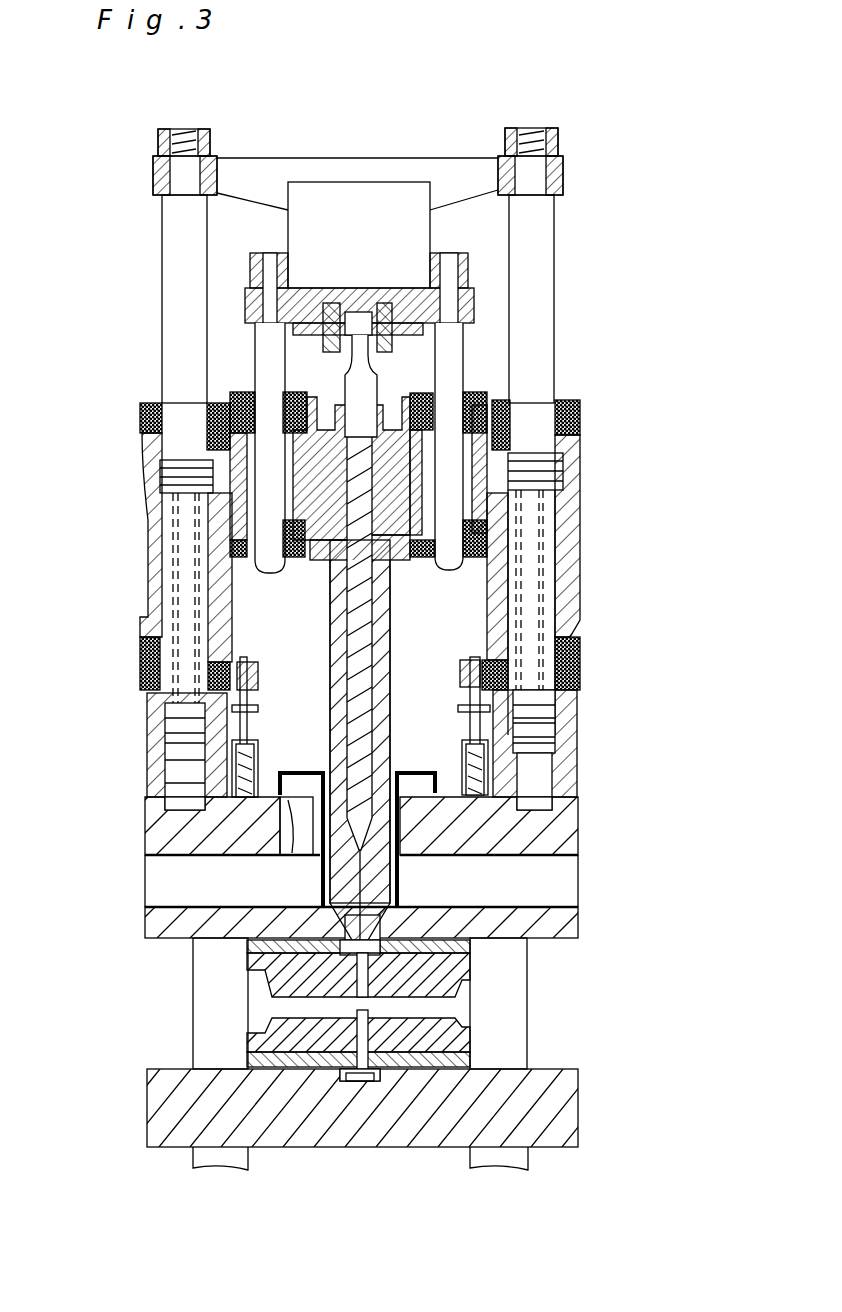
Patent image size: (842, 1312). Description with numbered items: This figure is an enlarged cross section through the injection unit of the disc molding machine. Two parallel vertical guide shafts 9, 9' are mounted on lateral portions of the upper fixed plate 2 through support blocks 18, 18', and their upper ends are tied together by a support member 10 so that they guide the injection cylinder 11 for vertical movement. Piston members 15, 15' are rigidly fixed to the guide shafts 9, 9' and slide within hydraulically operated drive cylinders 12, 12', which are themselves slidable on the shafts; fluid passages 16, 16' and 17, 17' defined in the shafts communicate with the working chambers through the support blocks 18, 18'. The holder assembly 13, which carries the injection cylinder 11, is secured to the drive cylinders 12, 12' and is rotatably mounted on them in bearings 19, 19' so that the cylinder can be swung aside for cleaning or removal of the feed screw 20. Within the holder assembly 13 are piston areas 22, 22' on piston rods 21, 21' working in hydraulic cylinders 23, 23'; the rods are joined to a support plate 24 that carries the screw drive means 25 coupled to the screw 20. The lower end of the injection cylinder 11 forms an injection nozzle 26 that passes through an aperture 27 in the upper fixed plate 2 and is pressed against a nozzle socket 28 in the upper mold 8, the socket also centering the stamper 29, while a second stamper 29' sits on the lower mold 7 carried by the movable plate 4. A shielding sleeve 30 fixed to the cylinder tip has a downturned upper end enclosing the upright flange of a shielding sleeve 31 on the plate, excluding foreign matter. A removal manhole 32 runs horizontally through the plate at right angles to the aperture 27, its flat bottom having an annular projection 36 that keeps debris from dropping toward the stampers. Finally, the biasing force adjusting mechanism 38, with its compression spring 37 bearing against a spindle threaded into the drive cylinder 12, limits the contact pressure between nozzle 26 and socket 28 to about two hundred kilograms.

The upper fixed plate 2 is at (565, 800).
The movable plate 4 is at (557, 1097).
The lower mold 7 is at (400, 1035).
The upper mold 8 is at (245, 975).
The guide shaft 9 is at (581, 299).
The guide shaft 9' is at (126, 299).
The support member 10 is at (563, 160).
The injection cylinder 11 is at (390, 686).
The drive cylinder 12 is at (576, 547).
The drive cylinder 12' is at (138, 547).
The holder assembly 13 is at (500, 430).
The piston member 15 is at (586, 477).
The piston member 15' is at (129, 478).
The elevating fluid passage 16 is at (586, 620).
The elevating fluid passage 16' is at (122, 621).
The fluid passage 17 is at (573, 620).
The fluid passage 17' is at (137, 621).
The support block 18 is at (579, 750).
The support block 18' is at (136, 751).
The bearing 19 is at (537, 530).
The bearing 19' is at (175, 531).
The feed screw 20 is at (350, 795).
The piston rod 21 is at (550, 448).
The piston rod 21' is at (165, 448).
The piston area 22 is at (537, 429).
The piston area 22' is at (176, 423).
The hydraulic cylinder 23 is at (564, 406).
The hydraulic cylinder 23' is at (150, 407).
The support plate 24 is at (468, 303).
The screw drive means 25 is at (415, 233).
The injection nozzle 26 is at (380, 932).
The aperture 27 is at (410, 830).
The nozzle socket 28 is at (470, 970).
The stamper 29 is at (434, 1032).
The stamper 29' is at (506, 1045).
The shielding sleeve 30 is at (300, 858).
The shielding sleeve 31 is at (300, 825).
The removal manhole 32 is at (550, 878).
The annular projection 36 is at (320, 910).
The compression spring 37 is at (245, 758).
The biasing force adjusting mechanism 38 is at (240, 703).